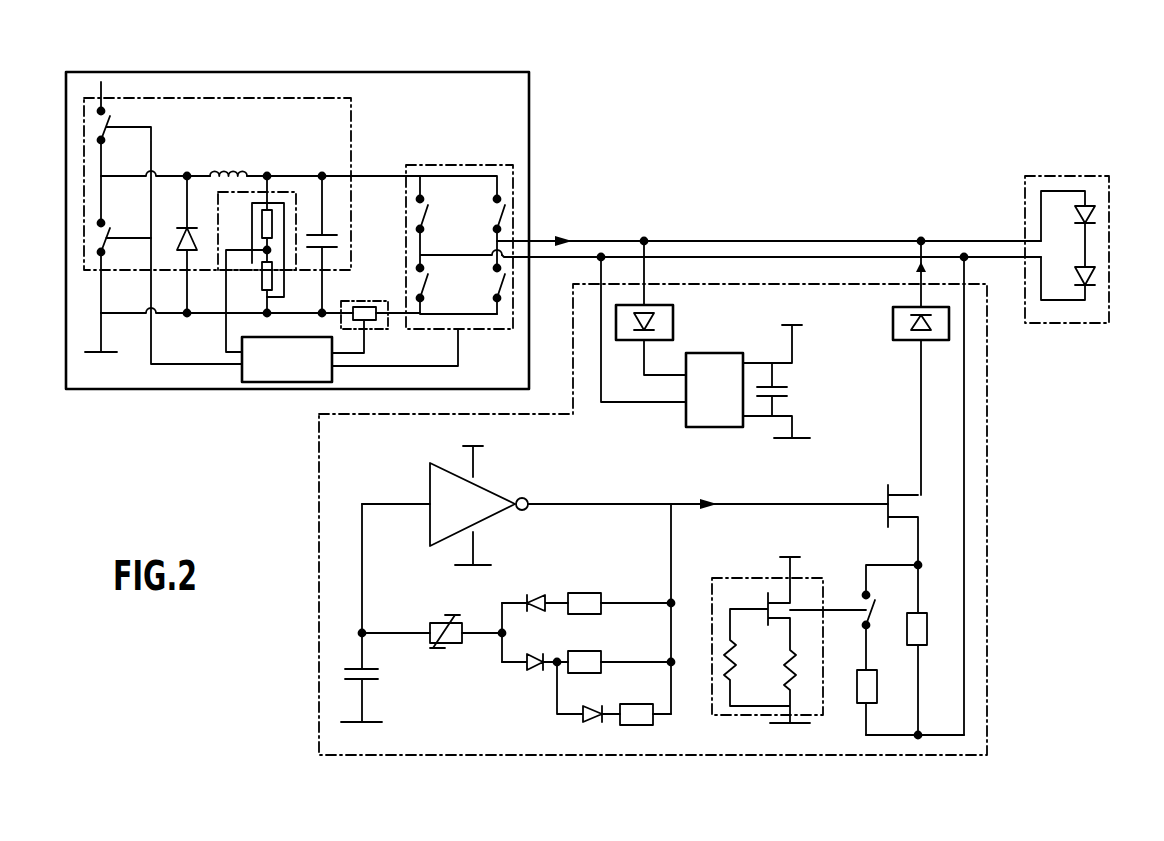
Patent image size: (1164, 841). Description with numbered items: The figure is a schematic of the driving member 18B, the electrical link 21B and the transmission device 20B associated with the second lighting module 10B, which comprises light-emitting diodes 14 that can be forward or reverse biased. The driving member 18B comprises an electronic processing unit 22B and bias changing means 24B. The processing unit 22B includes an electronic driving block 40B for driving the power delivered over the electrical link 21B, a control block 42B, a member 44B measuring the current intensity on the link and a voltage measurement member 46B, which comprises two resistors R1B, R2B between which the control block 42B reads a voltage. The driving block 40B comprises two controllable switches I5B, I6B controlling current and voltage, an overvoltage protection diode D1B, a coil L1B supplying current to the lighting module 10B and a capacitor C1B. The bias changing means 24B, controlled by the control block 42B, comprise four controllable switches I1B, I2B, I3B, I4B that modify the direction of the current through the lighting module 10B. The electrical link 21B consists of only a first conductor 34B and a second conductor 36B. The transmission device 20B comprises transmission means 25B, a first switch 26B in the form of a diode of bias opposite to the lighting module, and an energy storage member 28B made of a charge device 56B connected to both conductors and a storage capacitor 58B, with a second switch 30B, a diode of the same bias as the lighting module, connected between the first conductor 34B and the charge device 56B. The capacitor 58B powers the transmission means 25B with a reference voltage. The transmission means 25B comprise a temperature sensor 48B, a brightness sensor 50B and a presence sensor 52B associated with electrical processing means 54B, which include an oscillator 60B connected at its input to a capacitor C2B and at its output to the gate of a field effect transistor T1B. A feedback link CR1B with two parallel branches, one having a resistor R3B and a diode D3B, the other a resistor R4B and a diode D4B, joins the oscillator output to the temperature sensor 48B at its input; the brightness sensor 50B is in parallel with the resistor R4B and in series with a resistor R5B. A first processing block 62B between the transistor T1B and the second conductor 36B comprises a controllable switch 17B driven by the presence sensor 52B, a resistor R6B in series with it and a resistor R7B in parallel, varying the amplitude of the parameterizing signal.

The electronic driving block 40B is at (265, 72).
The driving member 18B is at (176, 395).
The electronic processing unit 22B is at (361, 147).
The bias changing means 24B is at (478, 155).
The controllable switch I5B is at (170, 236).
The controllable switch I6B is at (125, 226).
The coil L1B is at (228, 161).
The overvoltage protection diode D1B is at (177, 245).
The resistor R1B is at (247, 218).
The resistor R2B is at (250, 289).
The voltage measurement member 46B is at (269, 272).
The capacitor C1B is at (332, 245).
The current measuring member 44B is at (366, 300).
The control block 42B is at (287, 359).
The controllable switch I1B is at (460, 222).
The controllable switch I2B is at (457, 290).
The controllable switch I3B is at (486, 290).
The controllable switch I4B is at (462, 222).
The first conductor 34B is at (718, 238).
The second conductor 36B is at (766, 255).
The electrical link 21B is at (832, 227).
The lighting module 10B is at (1066, 176).
The light-emitting diodes 14 is at (1098, 272).
The second switch 30B is at (676, 322).
The charge device 56B is at (672, 342).
The electrical energy storage capacitor 58B is at (786, 389).
The electrical energy storage member 28B is at (686, 441).
The first switch 26B is at (897, 345).
The field effect transistor T1B is at (922, 525).
The transmission means 25B is at (833, 490).
The electrical processing means 54B is at (932, 478).
The first processing block 62B is at (928, 560).
The resistor R7B is at (925, 612).
The controllable switch 17B is at (854, 617).
The resistor R6B is at (888, 696).
The presence sensor 52B is at (715, 577).
The transmission device 20B is at (988, 668).
The oscillator 60B is at (625, 494).
The capacitor C2B is at (377, 613).
The temperature sensor 48B is at (435, 621).
The feedback link CR1B is at (570, 590).
The diode D3B is at (531, 594).
The resistor R3B is at (619, 588).
The diode D4B is at (533, 672).
The resistor R4B is at (619, 648).
The brightness sensor 50B is at (584, 704).
The resistor R5B is at (660, 727).